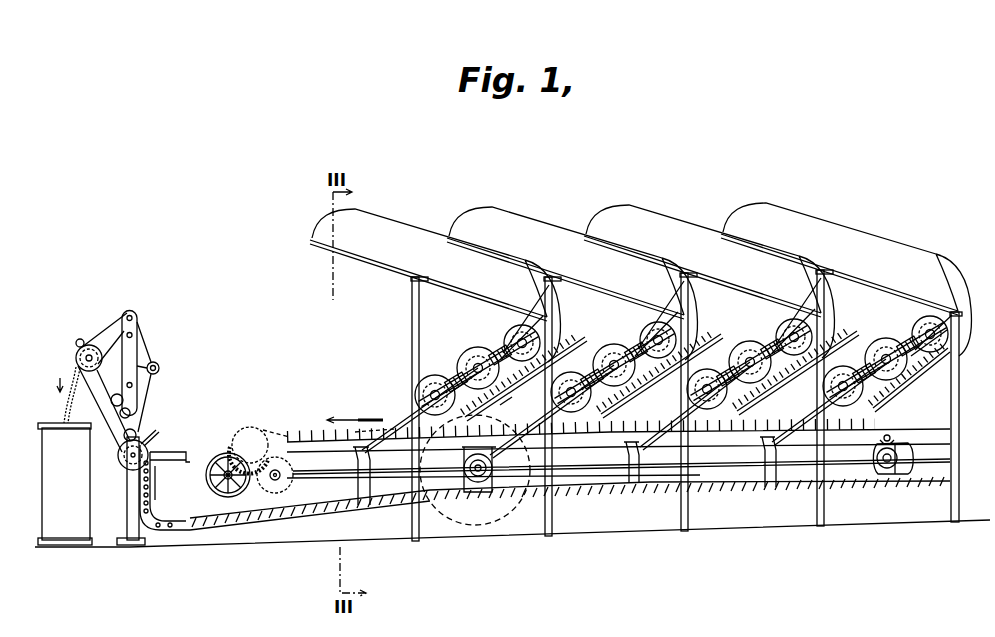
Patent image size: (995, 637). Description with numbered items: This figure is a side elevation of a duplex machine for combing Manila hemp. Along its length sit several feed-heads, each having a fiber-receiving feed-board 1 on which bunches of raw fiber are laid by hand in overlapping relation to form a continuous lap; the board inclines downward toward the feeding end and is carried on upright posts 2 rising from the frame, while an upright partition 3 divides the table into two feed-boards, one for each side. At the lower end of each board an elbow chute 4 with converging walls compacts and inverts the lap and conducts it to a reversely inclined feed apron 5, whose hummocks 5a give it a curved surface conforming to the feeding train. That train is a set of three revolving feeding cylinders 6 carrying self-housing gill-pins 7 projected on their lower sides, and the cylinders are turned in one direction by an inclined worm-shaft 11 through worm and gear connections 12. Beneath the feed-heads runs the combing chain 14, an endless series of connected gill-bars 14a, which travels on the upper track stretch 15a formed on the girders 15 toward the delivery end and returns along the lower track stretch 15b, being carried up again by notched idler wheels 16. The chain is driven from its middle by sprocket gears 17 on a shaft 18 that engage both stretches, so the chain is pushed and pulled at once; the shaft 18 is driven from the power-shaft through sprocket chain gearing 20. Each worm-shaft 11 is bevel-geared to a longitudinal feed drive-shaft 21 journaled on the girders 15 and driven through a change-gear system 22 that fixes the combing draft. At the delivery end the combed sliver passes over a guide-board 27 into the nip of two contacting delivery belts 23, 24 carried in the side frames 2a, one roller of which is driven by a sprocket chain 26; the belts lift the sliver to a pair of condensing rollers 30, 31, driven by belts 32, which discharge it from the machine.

The feed-board 1 is at (372, 260).
The upright posts 2 is at (412, 322).
The side frames 2a is at (135, 386).
The upright partition 3 is at (368, 214).
The elbow chute 4 is at (566, 328).
The feed apron 5 is at (577, 360).
The hummocks 5a is at (512, 399).
The revolving feeding cylinders 6 is at (479, 346).
The gill-pins 7 is at (612, 398).
The worm-shaft 11 is at (400, 418).
The worm and gear connections 12 is at (437, 383).
The combing chain 14 is at (606, 421).
The gill-bars 14a is at (152, 545).
The girders 15 is at (912, 438).
The upper track stretch 15a is at (168, 463).
The lower track stretch 15b is at (158, 486).
The notched idler wheels 16 is at (897, 476).
The sprocket gears 17 is at (465, 487).
The shaft 18 is at (484, 484).
The sprocket chain gearing 20 is at (248, 492).
The feed drive-shaft 21 is at (603, 470).
The change-gear system 22 is at (256, 430).
The delivery belt 23 is at (138, 325).
The delivery belt 24 is at (118, 345).
The sprocket chain 26 is at (224, 480).
The guide-board 27 is at (158, 431).
The condensing roller 30 is at (73, 368).
The condensing roller 31 is at (78, 341).
The belts 32 is at (93, 414).